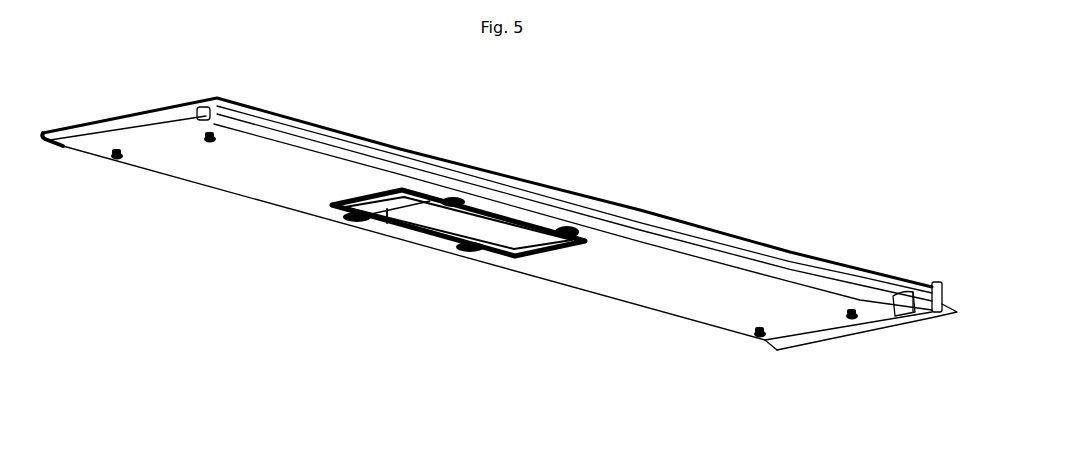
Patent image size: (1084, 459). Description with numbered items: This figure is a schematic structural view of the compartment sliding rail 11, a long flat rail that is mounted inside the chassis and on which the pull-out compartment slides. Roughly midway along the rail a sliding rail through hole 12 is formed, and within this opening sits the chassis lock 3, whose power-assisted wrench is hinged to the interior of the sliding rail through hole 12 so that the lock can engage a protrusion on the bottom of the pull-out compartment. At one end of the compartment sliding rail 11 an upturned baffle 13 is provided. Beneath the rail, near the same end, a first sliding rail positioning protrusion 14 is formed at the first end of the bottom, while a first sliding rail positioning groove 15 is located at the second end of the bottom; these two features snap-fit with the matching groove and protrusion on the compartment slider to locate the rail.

The compartment sliding rail 11 is at (620, 265).
The sliding rail through hole 12 is at (332, 204).
The chassis lock 3 is at (460, 230).
The baffle 13 is at (935, 285).
The first sliding rail positioning protrusion 14 is at (897, 295).
The first sliding rail positioning groove 15 is at (200, 116).